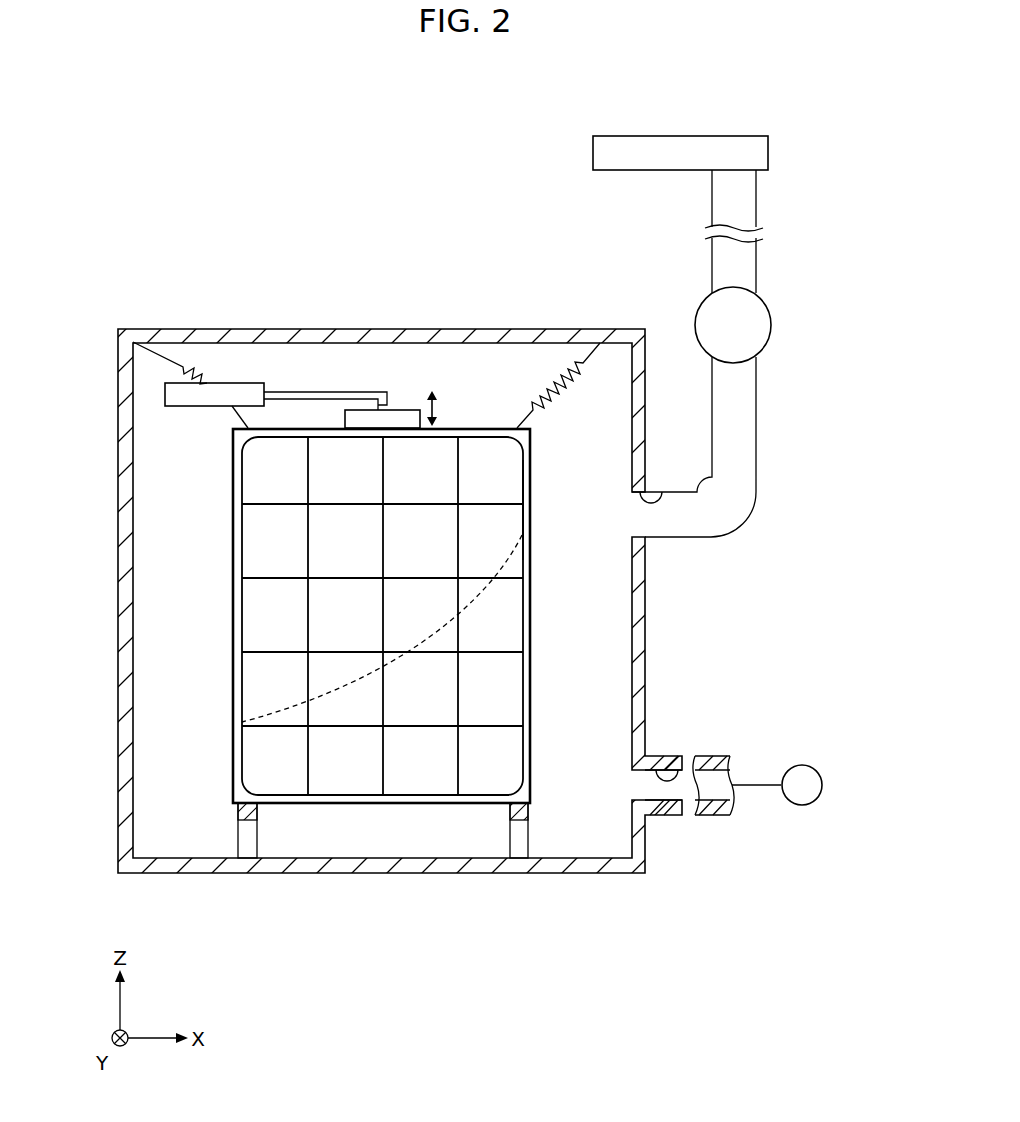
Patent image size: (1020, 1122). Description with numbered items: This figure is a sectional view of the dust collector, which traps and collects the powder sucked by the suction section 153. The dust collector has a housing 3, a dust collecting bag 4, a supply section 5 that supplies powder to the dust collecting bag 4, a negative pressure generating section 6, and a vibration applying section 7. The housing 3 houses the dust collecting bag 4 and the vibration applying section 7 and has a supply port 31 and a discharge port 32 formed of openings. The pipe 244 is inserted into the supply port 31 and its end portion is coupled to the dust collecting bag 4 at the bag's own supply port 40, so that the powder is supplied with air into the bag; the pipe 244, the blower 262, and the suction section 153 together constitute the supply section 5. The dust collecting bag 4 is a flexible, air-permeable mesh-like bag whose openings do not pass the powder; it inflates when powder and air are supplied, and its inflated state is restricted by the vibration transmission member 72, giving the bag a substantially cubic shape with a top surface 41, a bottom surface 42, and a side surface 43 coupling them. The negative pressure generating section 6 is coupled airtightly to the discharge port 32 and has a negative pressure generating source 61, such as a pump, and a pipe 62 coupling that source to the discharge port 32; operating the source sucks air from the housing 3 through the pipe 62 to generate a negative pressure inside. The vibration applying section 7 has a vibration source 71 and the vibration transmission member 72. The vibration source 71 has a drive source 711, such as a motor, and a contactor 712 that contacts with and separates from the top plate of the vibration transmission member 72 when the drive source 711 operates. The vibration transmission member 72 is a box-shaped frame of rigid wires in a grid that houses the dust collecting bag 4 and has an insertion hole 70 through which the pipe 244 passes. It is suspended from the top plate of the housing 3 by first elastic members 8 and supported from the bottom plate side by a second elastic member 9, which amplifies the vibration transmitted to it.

The housing 3 is at (589, 328).
The supply port 31 is at (655, 490).
The discharge port 32 is at (661, 769).
The dust collecting bag 4 is at (292, 601).
The supply port 40 is at (522, 523).
The top surface 41 is at (321, 436).
The bottom surface 42 is at (357, 797).
The side surface 43 is at (241, 572).
The insertion hole 70 is at (524, 509).
The supply section 5 is at (733, 336).
The suction section 153 is at (751, 152).
The blower 262 is at (771, 325).
The pipe 244 is at (740, 405).
The negative pressure generating section 6 is at (767, 773).
The negative pressure generating source 61 is at (803, 763).
The pipe 62 is at (713, 816).
The vibration applying section 7 is at (238, 330).
The vibration source 71 is at (151, 349).
The drive source 711 is at (183, 396).
The contactor 712 is at (404, 410).
The vibration transmission member 72 is at (297, 428).
The first elastic member 8 is at (178, 365).
The second elastic member 9 is at (257, 806).